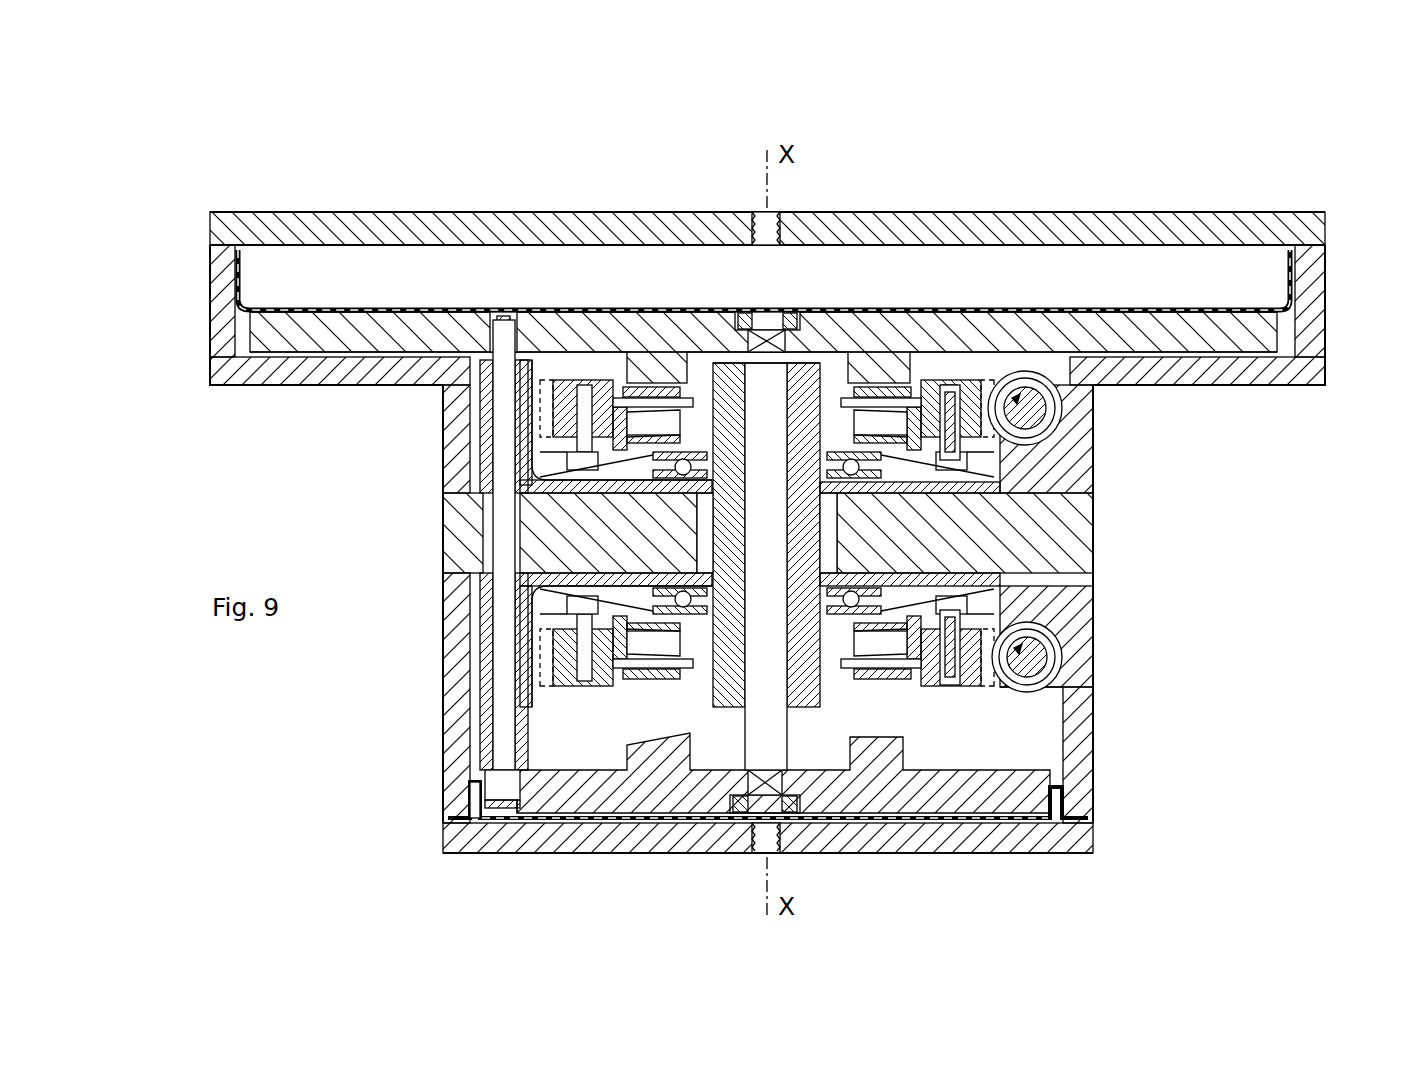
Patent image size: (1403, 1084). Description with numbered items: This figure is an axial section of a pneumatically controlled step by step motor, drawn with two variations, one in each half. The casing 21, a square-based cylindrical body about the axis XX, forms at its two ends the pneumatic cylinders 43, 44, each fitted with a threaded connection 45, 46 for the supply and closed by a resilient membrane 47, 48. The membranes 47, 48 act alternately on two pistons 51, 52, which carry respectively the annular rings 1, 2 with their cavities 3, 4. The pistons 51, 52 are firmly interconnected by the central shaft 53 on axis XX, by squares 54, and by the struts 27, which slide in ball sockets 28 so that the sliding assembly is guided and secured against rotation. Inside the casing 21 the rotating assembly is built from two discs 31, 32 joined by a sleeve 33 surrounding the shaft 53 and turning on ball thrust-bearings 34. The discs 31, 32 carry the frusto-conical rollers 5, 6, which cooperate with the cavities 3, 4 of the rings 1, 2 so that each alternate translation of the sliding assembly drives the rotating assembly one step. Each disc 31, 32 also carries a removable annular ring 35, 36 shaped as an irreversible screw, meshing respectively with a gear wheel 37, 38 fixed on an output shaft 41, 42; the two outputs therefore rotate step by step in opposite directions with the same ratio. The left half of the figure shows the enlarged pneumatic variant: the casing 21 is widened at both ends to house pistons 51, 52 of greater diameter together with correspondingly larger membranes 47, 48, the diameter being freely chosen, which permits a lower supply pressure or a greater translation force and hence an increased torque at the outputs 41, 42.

The annular ring 1 is at (768, 826).
The annular ring 2 is at (642, 350).
The cavities 3 is at (645, 715).
The cavities 4 is at (530, 427).
The frusto-conical rollers 5 is at (633, 643).
The frusto-conical rollers 6 is at (663, 383).
The casing 21 is at (767, 197).
The struts 27 is at (503, 465).
The ball sockets 28 is at (483, 393).
The disc 31 is at (650, 597).
The disc 32 is at (523, 490).
The sleeve 33 is at (727, 512).
The ball thrust-bearings 34 is at (888, 578).
The removable annular ring 35 is at (972, 673).
The removable annular ring 36 is at (970, 383).
The gear wheel 37 is at (1052, 670).
The gear wheel 38 is at (1065, 375).
The output shaft 41 is at (1089, 660).
The output shaft 42 is at (1089, 297).
The pneumatic cylinder 43 is at (560, 815).
The pneumatic cylinder 44 is at (567, 272).
The threaded connection 45 is at (763, 840).
The threaded connection 46 is at (770, 227).
The resilient membrane 47 is at (622, 808).
The resilient membrane 48 is at (658, 305).
The piston 51 is at (542, 787).
The piston 52 is at (540, 327).
The shaft 53 is at (780, 523).
The squares 54 is at (750, 337).